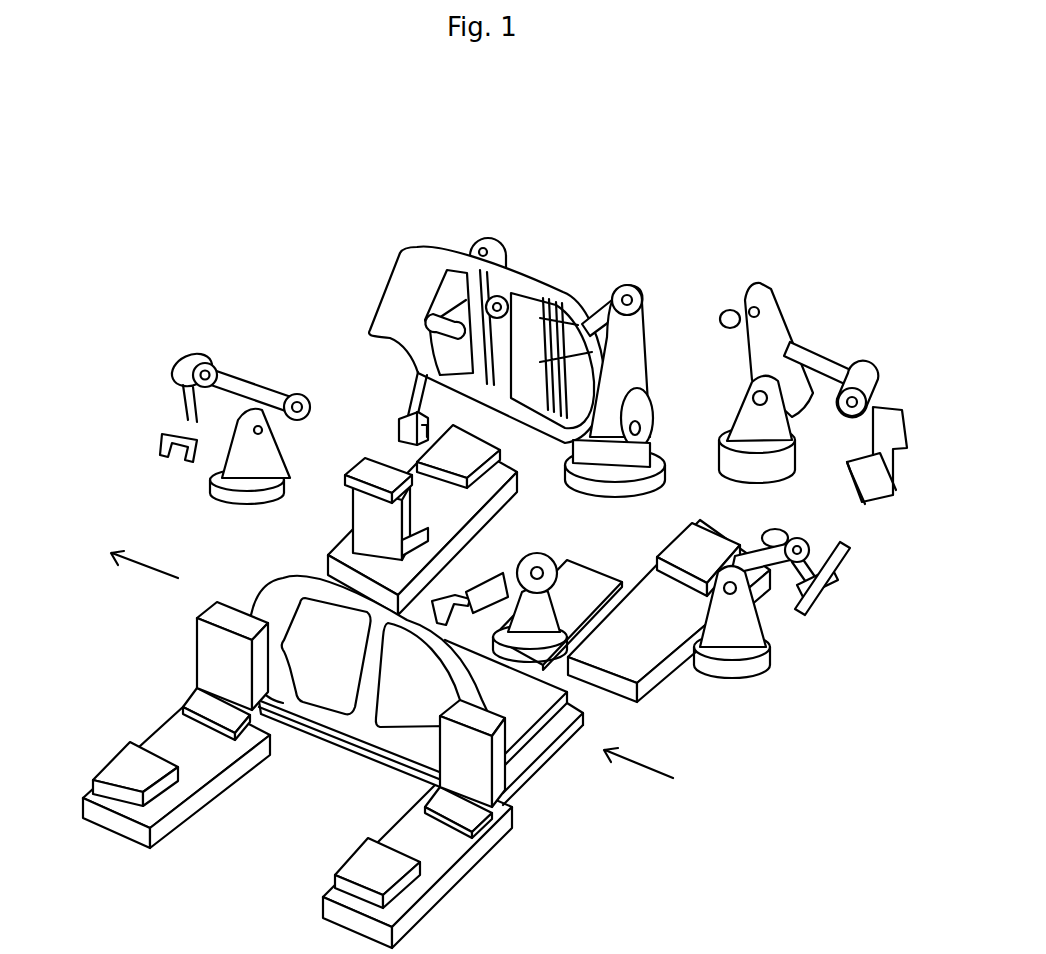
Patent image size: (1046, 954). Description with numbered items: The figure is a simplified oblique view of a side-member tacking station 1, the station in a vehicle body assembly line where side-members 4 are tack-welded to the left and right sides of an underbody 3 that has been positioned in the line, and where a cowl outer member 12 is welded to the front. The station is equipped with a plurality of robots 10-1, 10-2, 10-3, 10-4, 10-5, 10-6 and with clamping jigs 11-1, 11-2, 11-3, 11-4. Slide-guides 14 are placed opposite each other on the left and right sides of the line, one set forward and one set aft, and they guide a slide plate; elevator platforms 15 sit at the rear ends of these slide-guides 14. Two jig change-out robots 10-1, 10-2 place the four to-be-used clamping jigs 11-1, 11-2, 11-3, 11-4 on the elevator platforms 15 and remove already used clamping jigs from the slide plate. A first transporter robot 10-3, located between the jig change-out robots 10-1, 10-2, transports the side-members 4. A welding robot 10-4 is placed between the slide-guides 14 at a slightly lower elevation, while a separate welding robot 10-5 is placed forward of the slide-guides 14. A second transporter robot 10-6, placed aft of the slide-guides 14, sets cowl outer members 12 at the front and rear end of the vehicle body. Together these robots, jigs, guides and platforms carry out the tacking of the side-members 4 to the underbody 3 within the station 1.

The side-member tacking station 1 is at (586, 797).
The underbody 3 is at (567, 688).
The side-member 4 is at (395, 267).
The jig change-out robot 10-1 is at (778, 303).
The jig change-out robot 10-2 is at (498, 238).
The first transporter robot 10-3 is at (658, 317).
The welding robot 10-4 is at (560, 533).
The welding robot 10-5 is at (282, 380).
The second transporter robot 10-6 is at (760, 617).
The clamping jig 11-1 is at (497, 790).
The clamping jig 11-2 is at (212, 650).
The clamping jig 11-3 is at (867, 480).
The clamping jig 11-4 is at (367, 517).
The cowl outer member 12 is at (843, 565).
The slide-guide 14 is at (480, 517).
The elevator platform 15 is at (437, 453).